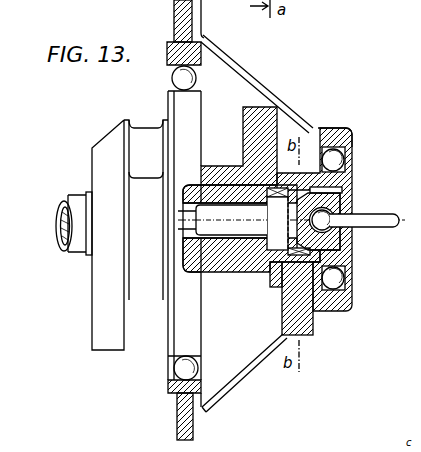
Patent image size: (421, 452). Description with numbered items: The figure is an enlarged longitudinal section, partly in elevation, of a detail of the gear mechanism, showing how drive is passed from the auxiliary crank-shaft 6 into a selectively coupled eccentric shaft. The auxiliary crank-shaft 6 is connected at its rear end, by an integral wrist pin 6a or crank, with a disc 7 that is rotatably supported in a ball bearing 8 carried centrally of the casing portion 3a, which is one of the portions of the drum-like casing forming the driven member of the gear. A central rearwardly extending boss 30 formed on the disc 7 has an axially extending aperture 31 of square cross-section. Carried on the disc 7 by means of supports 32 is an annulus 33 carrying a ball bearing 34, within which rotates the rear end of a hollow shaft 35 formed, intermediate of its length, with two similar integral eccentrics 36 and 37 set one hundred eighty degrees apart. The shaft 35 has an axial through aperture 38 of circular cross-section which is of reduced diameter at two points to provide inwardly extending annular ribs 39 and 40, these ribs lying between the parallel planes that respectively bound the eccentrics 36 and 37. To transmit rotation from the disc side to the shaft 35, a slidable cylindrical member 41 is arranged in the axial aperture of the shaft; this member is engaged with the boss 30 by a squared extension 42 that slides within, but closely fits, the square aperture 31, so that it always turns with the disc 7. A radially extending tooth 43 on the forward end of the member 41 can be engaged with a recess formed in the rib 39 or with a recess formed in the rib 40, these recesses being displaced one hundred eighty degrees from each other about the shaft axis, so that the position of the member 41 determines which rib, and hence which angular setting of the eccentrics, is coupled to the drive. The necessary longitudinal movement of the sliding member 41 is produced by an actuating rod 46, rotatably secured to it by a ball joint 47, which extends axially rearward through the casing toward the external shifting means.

The casing portion 3a is at (178, 10).
The ball bearing 8 is at (180, 77).
The supports 32 is at (242, 68).
The wrist pin 6a is at (155, 131).
The disc 7 is at (173, 310).
The auxiliary crank-shaft 6 is at (77, 198).
The eccentric 36 is at (263, 112).
The hollow shaft 35 is at (222, 273).
The squared extension 42 is at (184, 254).
The rib 39 is at (268, 262).
The eccentric 37 is at (315, 325).
The rib 40 is at (303, 205).
The annulus 33 is at (353, 133).
The ball bearing 34 is at (346, 161).
The axial through aperture 38 is at (343, 193).
The radially extending tooth 43 is at (277, 187).
The slidable cylindrical member 41 is at (338, 242).
The ball joint 47 is at (333, 226).
The actuating rod 46 is at (386, 229).
The boss 30 is at (183, 193).
The axially extending aperture 31 is at (158, 220).